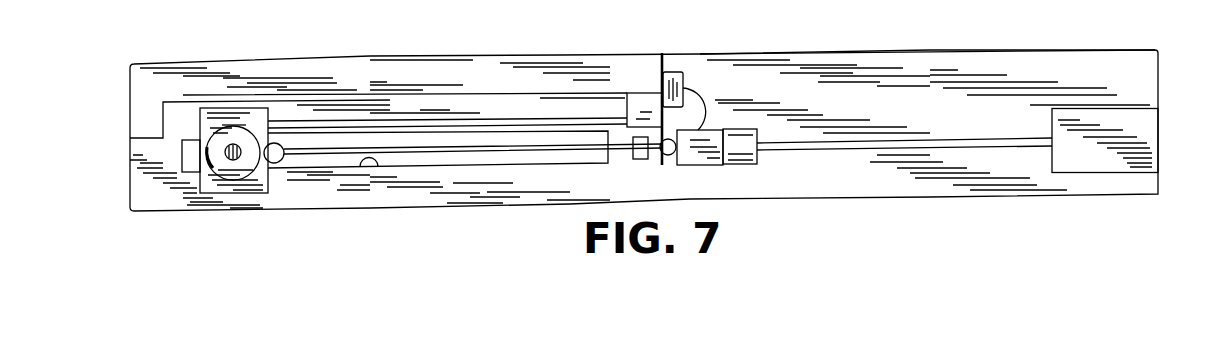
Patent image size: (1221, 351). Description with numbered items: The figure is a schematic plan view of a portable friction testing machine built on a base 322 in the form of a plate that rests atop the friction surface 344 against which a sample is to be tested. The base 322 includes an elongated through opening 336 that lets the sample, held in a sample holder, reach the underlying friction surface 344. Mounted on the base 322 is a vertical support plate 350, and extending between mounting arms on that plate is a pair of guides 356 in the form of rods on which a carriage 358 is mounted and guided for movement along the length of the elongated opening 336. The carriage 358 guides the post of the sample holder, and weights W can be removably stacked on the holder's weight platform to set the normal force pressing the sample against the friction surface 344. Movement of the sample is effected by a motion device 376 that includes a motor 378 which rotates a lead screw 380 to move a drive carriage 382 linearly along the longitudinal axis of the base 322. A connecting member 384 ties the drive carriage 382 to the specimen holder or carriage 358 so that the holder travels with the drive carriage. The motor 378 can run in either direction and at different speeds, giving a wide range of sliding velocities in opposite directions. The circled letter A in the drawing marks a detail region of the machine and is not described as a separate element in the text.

The weights W is at (226, 124).
The detail A is at (670, 73).
The base 322 is at (958, 197).
The elongated through opening 336 is at (356, 167).
The friction surface 344 is at (447, 158).
The vertical support plate 350 is at (267, 72).
The guides 356 is at (408, 118).
The carriage 358 is at (218, 196).
The motion device 376 is at (943, 107).
The motor 378 is at (1112, 172).
The lead screw 380 is at (867, 150).
The drive carriage 382 is at (707, 163).
The connecting member 384 is at (533, 155).